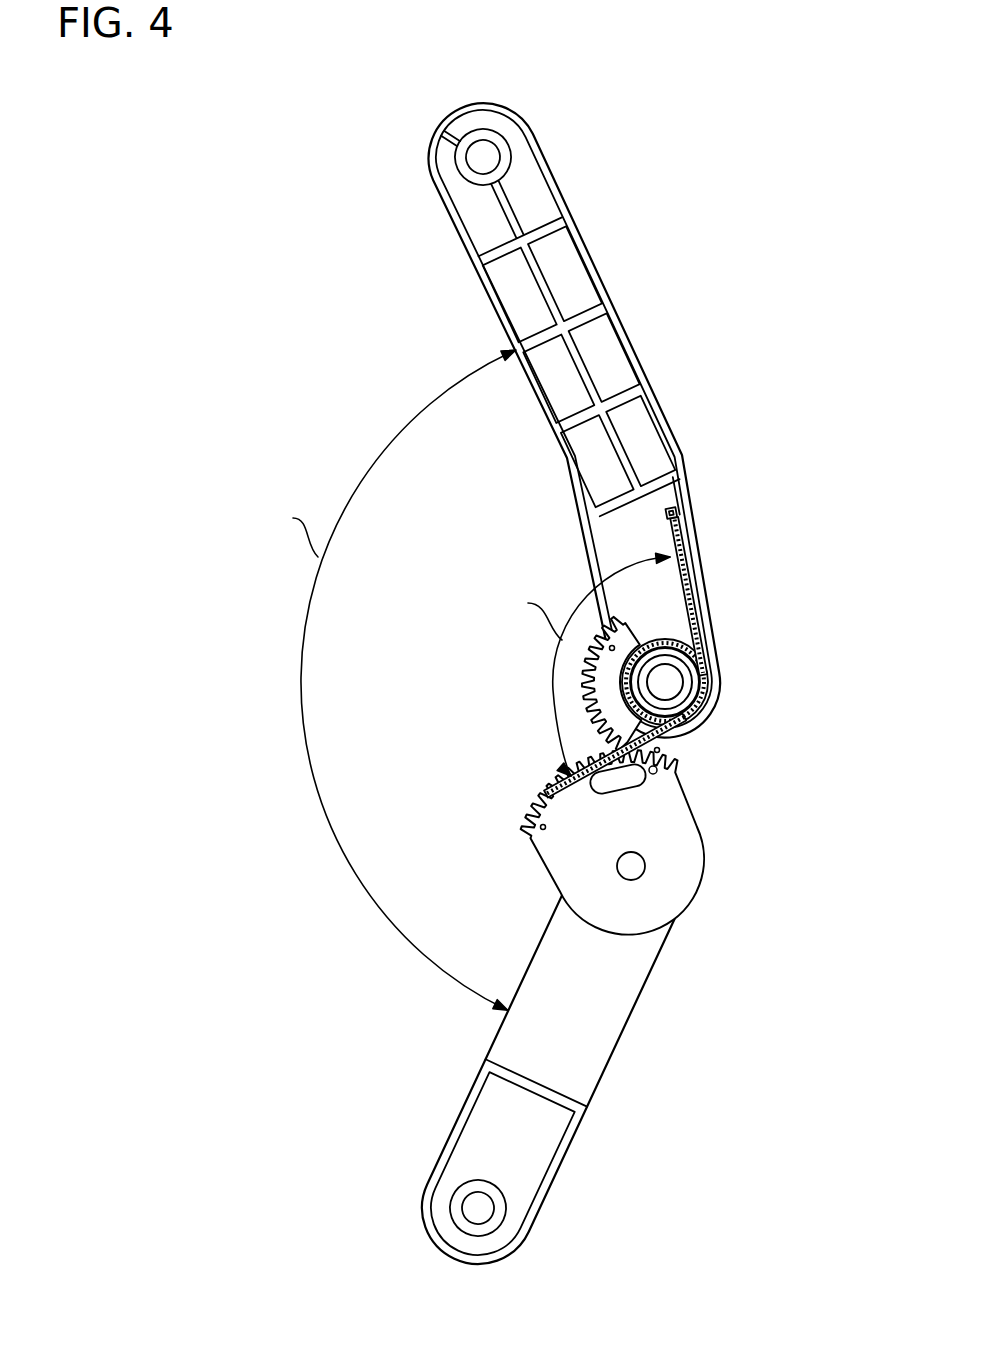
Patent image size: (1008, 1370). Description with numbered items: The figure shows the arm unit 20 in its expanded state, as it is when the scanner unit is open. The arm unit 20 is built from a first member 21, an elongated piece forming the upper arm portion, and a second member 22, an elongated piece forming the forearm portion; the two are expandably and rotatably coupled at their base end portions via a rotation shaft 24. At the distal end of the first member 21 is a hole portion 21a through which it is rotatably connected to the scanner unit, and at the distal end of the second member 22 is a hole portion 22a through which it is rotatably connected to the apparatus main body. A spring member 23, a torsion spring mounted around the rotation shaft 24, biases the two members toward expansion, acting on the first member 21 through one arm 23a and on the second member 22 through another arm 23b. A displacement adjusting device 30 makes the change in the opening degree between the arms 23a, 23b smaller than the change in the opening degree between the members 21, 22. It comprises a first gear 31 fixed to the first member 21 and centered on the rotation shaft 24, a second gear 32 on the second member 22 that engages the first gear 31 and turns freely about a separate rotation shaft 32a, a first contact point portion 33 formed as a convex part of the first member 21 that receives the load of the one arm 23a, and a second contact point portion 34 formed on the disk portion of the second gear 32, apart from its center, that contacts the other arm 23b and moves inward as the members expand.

The arm unit 20 is at (390, 262).
The first member 21 is at (566, 403).
The hole portion 21a is at (483, 157).
The second member 22 is at (553, 1077).
The hole portion 22a is at (478, 1208).
The spring member 23 is at (644, 635).
The one arm 23a is at (737, 591).
The other arm 23b is at (560, 784).
The rotation shaft 24 is at (701, 668).
The displacement adjusting device 30 is at (620, 506).
The first gear 31 is at (630, 624).
The second gear 32 is at (616, 846).
The rotation shaft 32a is at (645, 866).
The first contact point portion 33 is at (671, 513).
The second contact point portion 34 is at (647, 780).